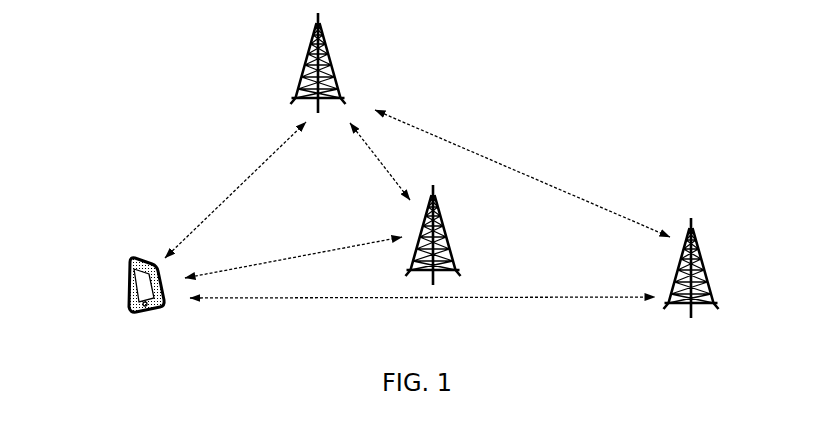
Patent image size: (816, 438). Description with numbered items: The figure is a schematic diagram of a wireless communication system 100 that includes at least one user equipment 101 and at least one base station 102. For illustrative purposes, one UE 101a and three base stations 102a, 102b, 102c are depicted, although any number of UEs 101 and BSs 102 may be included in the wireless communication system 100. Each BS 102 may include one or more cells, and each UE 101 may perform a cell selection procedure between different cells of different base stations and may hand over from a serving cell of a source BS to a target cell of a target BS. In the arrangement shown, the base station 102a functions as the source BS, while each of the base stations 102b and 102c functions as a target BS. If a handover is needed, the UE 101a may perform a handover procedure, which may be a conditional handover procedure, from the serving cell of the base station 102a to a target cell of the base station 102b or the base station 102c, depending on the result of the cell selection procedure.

The wireless communication system 100 is at (705, 107).
The user equipment 101 is at (112, 293).
The user equipment 101a is at (118, 252).
The base station 102 is at (288, 78).
The base station 102a is at (348, 77).
The base station 102b is at (452, 242).
The base station 102c is at (712, 256).